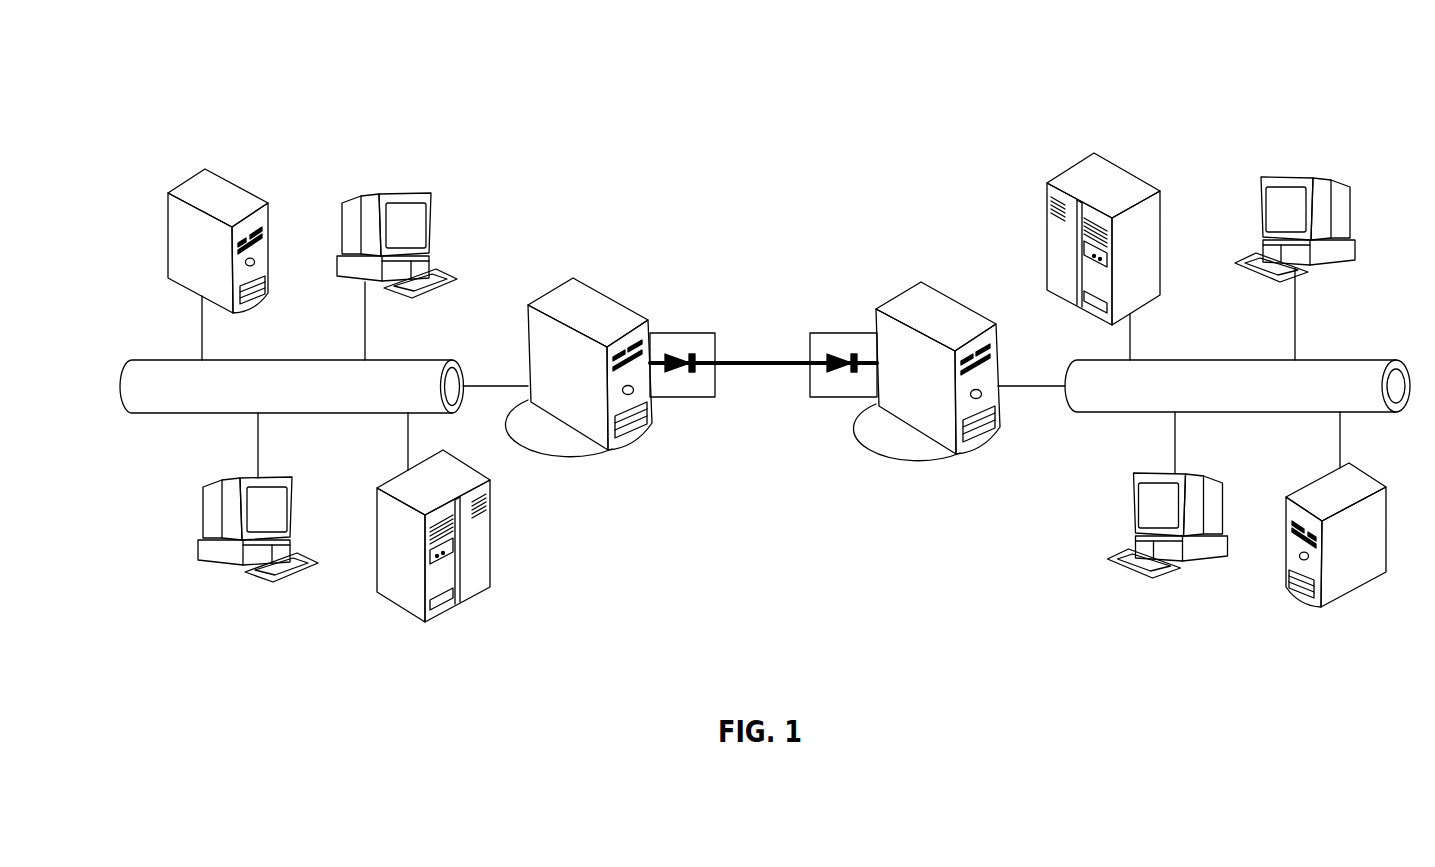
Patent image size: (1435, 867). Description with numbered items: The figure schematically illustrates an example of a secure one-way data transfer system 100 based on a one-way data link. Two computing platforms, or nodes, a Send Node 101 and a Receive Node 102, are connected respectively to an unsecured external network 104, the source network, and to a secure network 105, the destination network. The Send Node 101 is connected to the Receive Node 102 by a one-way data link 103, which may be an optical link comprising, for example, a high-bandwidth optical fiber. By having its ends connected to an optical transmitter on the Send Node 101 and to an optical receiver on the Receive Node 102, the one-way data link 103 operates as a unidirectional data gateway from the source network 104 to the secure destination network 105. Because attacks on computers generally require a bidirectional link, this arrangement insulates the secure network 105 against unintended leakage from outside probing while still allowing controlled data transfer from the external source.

The one-way data transfer system 100 is at (256, 85).
The Send Node 101 is at (600, 300).
The Receive Node 102 is at (927, 350).
The one-way data link 103 is at (762, 368).
The unsecured external network 104 is at (380, 360).
The secure network 105 is at (1320, 360).